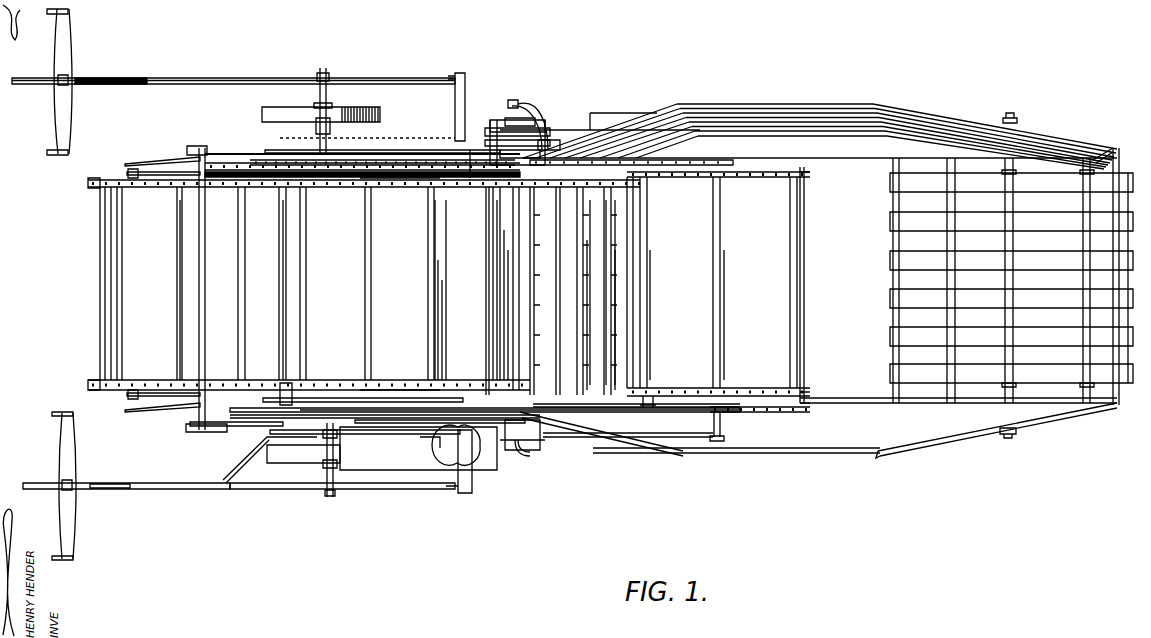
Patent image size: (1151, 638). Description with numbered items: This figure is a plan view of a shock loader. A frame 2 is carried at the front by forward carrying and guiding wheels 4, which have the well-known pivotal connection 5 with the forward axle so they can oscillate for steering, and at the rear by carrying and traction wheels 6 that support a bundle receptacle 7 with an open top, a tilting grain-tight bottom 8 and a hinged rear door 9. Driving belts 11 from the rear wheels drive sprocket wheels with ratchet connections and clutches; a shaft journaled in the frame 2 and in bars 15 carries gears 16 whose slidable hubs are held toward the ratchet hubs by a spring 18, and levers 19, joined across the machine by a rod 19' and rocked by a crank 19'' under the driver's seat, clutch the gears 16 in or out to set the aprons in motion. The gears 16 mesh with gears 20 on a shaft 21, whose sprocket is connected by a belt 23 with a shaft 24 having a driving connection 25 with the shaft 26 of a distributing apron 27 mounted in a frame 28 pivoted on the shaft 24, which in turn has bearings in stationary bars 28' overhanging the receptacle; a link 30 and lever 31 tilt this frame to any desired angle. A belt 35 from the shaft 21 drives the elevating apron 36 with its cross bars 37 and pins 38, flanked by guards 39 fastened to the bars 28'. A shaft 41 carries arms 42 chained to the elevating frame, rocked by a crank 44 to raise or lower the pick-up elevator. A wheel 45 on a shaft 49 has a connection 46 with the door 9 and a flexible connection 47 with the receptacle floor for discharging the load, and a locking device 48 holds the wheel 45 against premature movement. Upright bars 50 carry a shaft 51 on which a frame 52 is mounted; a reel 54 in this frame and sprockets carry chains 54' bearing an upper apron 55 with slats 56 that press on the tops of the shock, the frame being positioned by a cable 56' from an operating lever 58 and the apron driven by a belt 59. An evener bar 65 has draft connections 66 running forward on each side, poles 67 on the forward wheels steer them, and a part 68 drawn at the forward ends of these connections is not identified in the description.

The frame 2 is at (200, 241).
The forward carrying and guiding wheels 4 is at (272, 111).
The pivotal connection 5 is at (330, 120).
The rear carrying and traction wheels 6 is at (615, 120).
The bundle receptacle 7 is at (830, 118).
The tilting grain-tight bottom 8 is at (958, 280).
The hinged rear door 9 is at (1057, 288).
The driving belts 11 is at (500, 148).
The bars 15 is at (520, 104).
The gears 16 is at (470, 437).
The spring 18 is at (500, 118).
The levers 19 is at (481, 275).
The rod 19' is at (483, 132).
The crank 19'' is at (410, 453).
The gears 20 is at (545, 444).
The shaft 21 is at (546, 140).
The belt 23 is at (683, 454).
The shaft 24 is at (722, 432).
The driving connection 25 is at (782, 413).
The shaft 26 is at (806, 403).
The apron 27 is at (718, 285).
The frame 28 is at (826, 274).
The bars 28' is at (643, 120).
The link 30 is at (653, 408).
The lever 31 is at (432, 411).
The belt 35 is at (583, 410).
The elevating apron 36 is at (590, 283).
The cross bars 37 is at (612, 320).
The pins 38 is at (607, 300).
The guards 39 is at (152, 162).
The shaft 41 is at (203, 432).
The arms 42 is at (198, 147).
The crank 44 is at (326, 440).
The wheel 45 is at (257, 440).
The connection 46 is at (390, 150).
The flexible connection 47 is at (400, 160).
The locking device 48 is at (310, 388).
The shaft 49 is at (283, 252).
The upright bars 50 is at (492, 176).
The shaft 51 is at (470, 180).
The frame 52 is at (127, 172).
The reel 54 is at (70, 284).
The chains 54' is at (400, 284).
The apron 55 is at (458, 290).
The slats 56 is at (466, 290).
The cable 56' is at (160, 290).
The operating lever 58 is at (402, 424).
The belt 59 is at (530, 124).
The evener bar 65 is at (461, 72).
The draft connections 66 is at (172, 78).
The poles 67 is at (197, 84).
The blade 68 is at (68, 43).